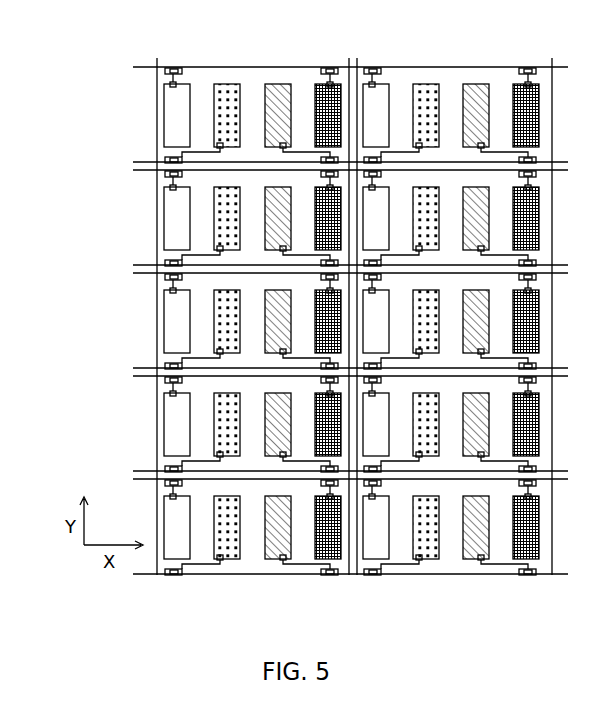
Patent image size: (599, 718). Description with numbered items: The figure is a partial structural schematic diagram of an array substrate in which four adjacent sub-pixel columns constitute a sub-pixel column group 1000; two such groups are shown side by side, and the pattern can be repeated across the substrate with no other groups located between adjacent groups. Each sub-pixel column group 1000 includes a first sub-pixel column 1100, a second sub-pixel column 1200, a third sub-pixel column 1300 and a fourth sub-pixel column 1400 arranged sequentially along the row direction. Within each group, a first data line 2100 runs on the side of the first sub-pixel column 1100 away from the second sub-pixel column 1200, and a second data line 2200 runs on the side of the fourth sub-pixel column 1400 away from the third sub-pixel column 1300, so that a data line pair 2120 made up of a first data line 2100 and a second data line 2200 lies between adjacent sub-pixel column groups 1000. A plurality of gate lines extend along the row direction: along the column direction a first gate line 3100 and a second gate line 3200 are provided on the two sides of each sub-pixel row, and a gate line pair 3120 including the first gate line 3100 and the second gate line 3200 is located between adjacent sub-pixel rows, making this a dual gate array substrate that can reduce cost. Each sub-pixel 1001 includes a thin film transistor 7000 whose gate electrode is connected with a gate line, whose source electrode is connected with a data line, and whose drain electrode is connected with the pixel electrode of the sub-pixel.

The sub-pixel column group 1000 is at (345, 578).
The sub-pixel 1001 is at (175, 345).
The first sub-pixel column 1100 is at (179, 93).
The second sub-pixel column 1200 is at (230, 97).
The third sub-pixel column 1300 is at (272, 93).
The fourth sub-pixel column 1400 is at (328, 107).
The first data line 2100 is at (157, 428).
The data line pair 2120 is at (410, 615).
The second data line 2200 is at (348, 577).
The first gate line 3100 is at (140, 67).
The gate line pair 3120 is at (299, 313).
The second gate line 3200 is at (138, 162).
The thin film transistor 7000 is at (165, 77).